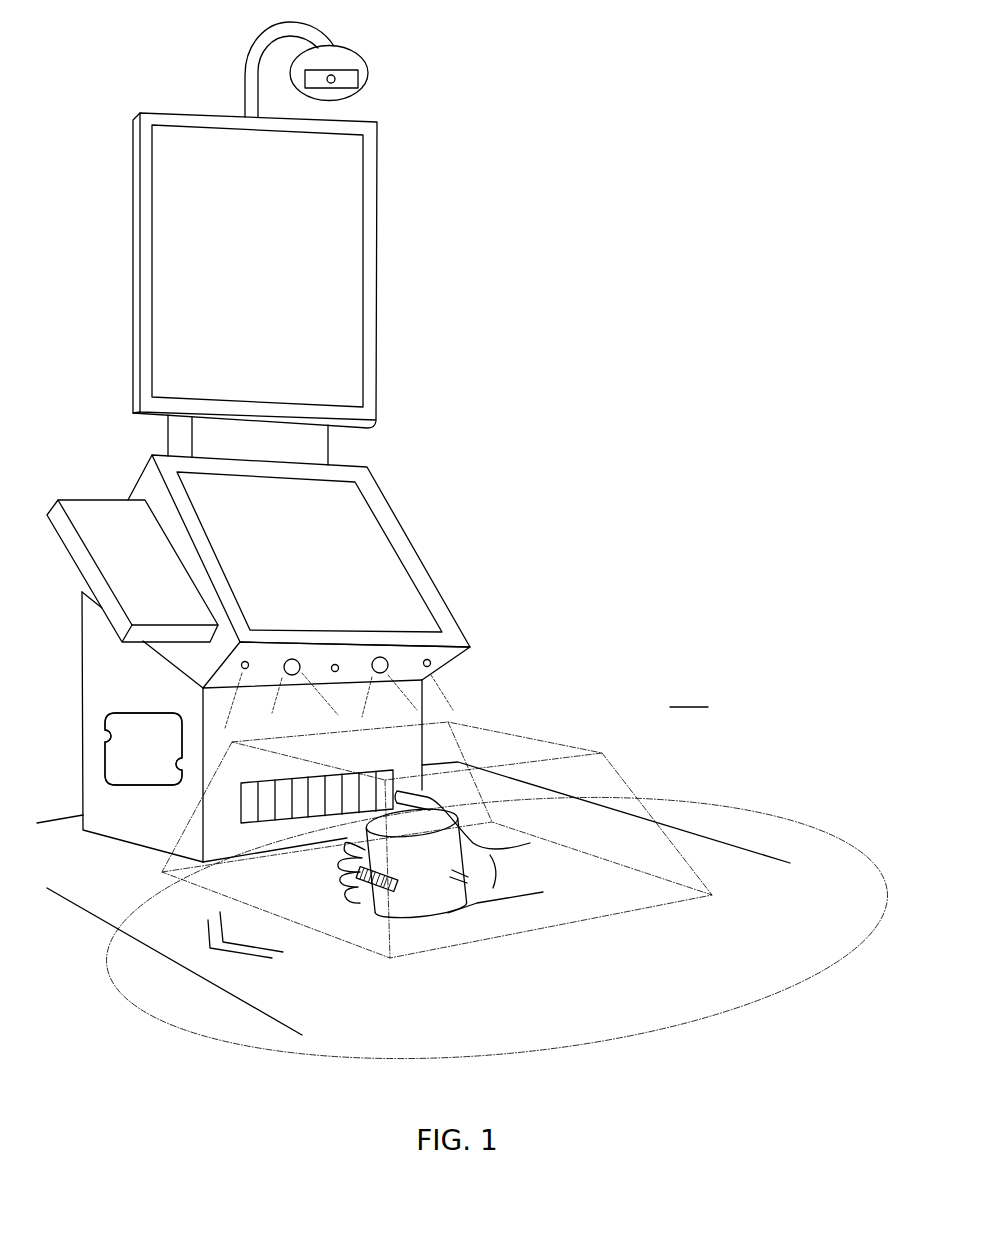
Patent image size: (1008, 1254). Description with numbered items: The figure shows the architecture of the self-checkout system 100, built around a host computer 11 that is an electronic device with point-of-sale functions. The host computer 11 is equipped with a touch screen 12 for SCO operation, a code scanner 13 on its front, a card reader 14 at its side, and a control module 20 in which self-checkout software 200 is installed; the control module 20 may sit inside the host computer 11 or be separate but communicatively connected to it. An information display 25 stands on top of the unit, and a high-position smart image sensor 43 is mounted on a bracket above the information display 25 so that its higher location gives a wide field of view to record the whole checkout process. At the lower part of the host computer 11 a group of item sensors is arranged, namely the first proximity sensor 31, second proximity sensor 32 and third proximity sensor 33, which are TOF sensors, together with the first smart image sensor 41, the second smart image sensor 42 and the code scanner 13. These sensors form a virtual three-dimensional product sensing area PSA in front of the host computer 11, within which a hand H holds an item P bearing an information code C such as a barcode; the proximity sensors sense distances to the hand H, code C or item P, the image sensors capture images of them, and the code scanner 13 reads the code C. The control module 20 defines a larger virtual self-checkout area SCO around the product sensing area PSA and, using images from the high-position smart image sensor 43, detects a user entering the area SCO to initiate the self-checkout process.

The high-position smart image sensor 43 is at (358, 53).
The information display 25 is at (255, 270).
The touch screen 12 is at (378, 512).
The card reader 14 is at (132, 548).
The host computer 11 is at (276, 727).
The control module 20 is at (143, 749).
The self-checkout software 200 is at (143, 749).
The third proximity sensor 33 is at (245, 661).
The second smart image sensor 42 is at (292, 658).
The second proximity sensor 32 is at (335, 664).
The first smart image sensor 41 is at (380, 656).
The first proximity sensor 31 is at (427, 659).
The code scanner 13 is at (303, 823).
The self-checkout system 100 is at (688, 694).
The item P is at (416, 863).
The hand H is at (440, 852).
The information code C is at (370, 892).
The product sensing area PSA is at (437, 951).
The self-checkout area SCO is at (653, 1033).